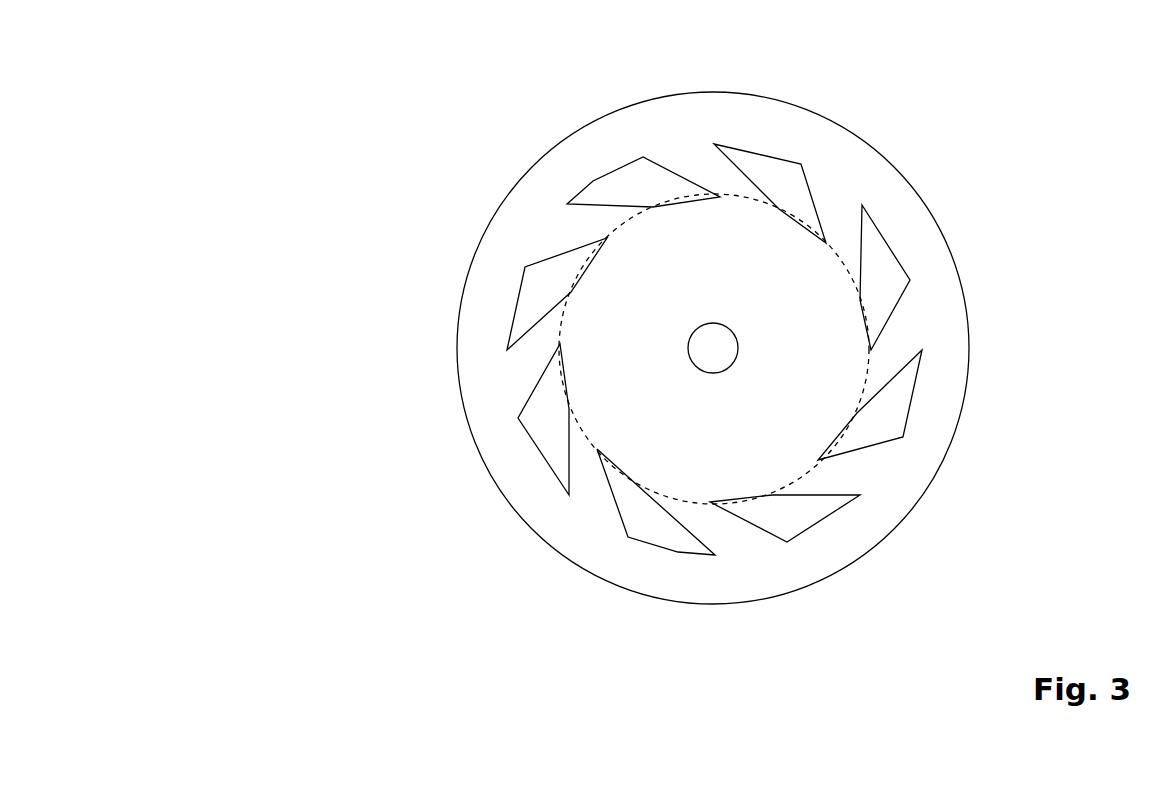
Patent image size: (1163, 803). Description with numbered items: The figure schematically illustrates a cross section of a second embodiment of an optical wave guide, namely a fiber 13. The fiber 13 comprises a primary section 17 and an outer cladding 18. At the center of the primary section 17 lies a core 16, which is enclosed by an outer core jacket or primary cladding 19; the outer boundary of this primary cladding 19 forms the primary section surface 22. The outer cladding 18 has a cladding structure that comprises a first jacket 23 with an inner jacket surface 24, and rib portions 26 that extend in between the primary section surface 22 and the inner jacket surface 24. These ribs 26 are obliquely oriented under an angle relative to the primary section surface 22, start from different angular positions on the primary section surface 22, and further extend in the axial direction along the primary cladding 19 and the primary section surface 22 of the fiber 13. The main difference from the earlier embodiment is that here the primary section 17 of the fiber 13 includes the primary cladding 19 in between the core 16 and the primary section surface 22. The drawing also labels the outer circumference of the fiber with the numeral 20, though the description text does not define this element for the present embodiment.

The impeller disc 13 is at (300, 150).
The central bore 16 is at (716, 373).
The hub portion 17 is at (612, 415).
The disc body 18 is at (515, 373).
The inner web 19 is at (935, 353).
The outer circumference 20 is at (512, 187).
The blade 22 is at (862, 298).
The blade region 23 is at (588, 160).
The opening 24 is at (755, 152).
The blade edge 26 is at (530, 448).